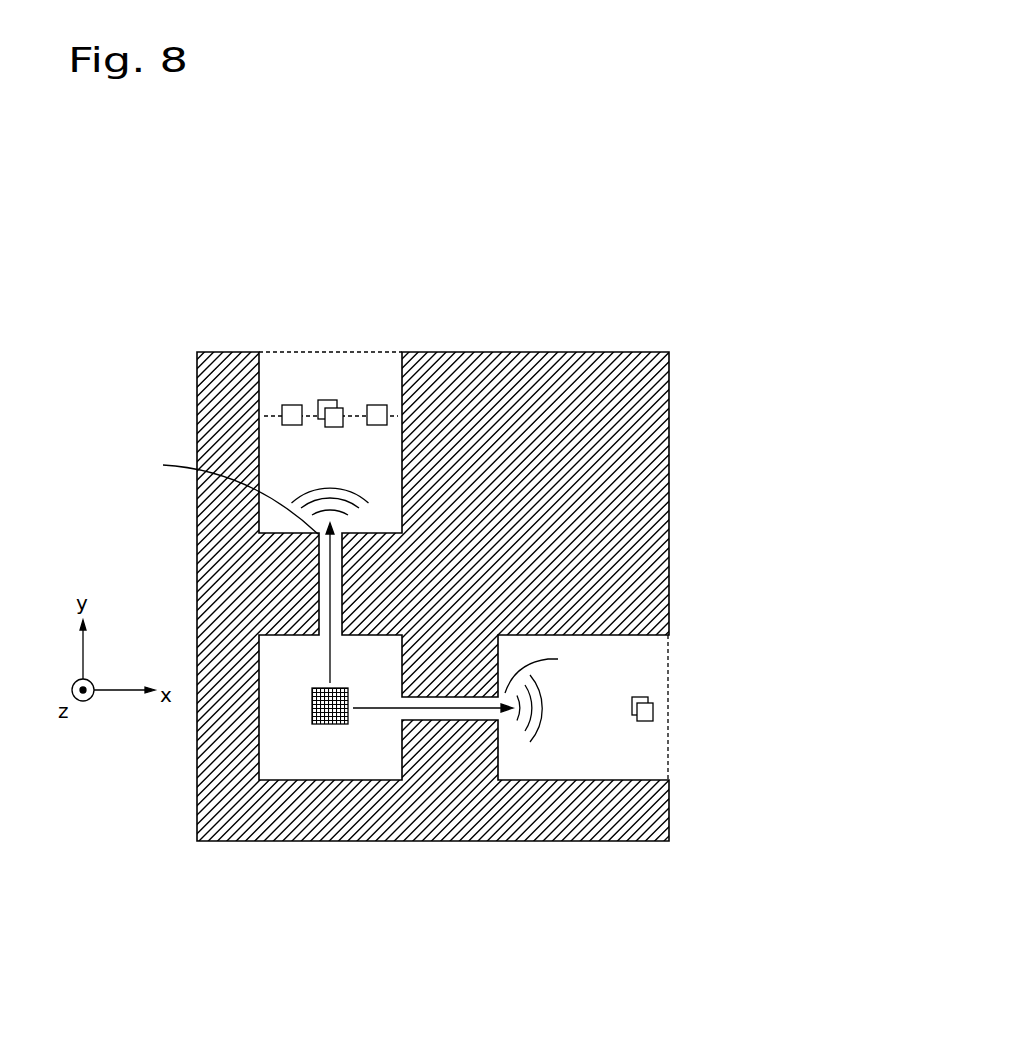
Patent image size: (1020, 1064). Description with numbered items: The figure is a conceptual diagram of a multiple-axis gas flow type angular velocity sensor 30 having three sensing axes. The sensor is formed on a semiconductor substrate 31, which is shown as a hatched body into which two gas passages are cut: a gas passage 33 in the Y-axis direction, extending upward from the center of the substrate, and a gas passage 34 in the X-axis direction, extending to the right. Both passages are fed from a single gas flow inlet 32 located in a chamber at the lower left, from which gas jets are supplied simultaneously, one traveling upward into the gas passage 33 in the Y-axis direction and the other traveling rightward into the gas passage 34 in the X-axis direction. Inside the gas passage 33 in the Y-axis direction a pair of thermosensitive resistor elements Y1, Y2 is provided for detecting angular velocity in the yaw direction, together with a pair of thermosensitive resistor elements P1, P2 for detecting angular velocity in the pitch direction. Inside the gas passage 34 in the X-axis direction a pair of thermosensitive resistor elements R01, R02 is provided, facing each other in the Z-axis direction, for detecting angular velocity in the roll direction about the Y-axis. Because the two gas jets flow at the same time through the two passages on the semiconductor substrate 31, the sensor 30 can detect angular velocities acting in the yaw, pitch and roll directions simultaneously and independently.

The multiple-axis gas flow type angular velocity sensor 30 is at (365, 273).
The semiconductor substrate 31 is at (633, 439).
The gas flow inlet 32 is at (323, 725).
The gas passage in the Y-axis direction 33 is at (295, 375).
The gas passage in the X-axis direction 34 is at (643, 757).
The thermosensitive resistor element Y1 is at (291, 425).
The thermosensitive resistor element Y2 is at (378, 425).
The thermosensitive resistor element P1 is at (331, 400).
The thermosensitive resistor element P2 is at (335, 427).
The thermosensitive resistor element R01 is at (643, 697).
The thermosensitive resistor element R02 is at (647, 722).